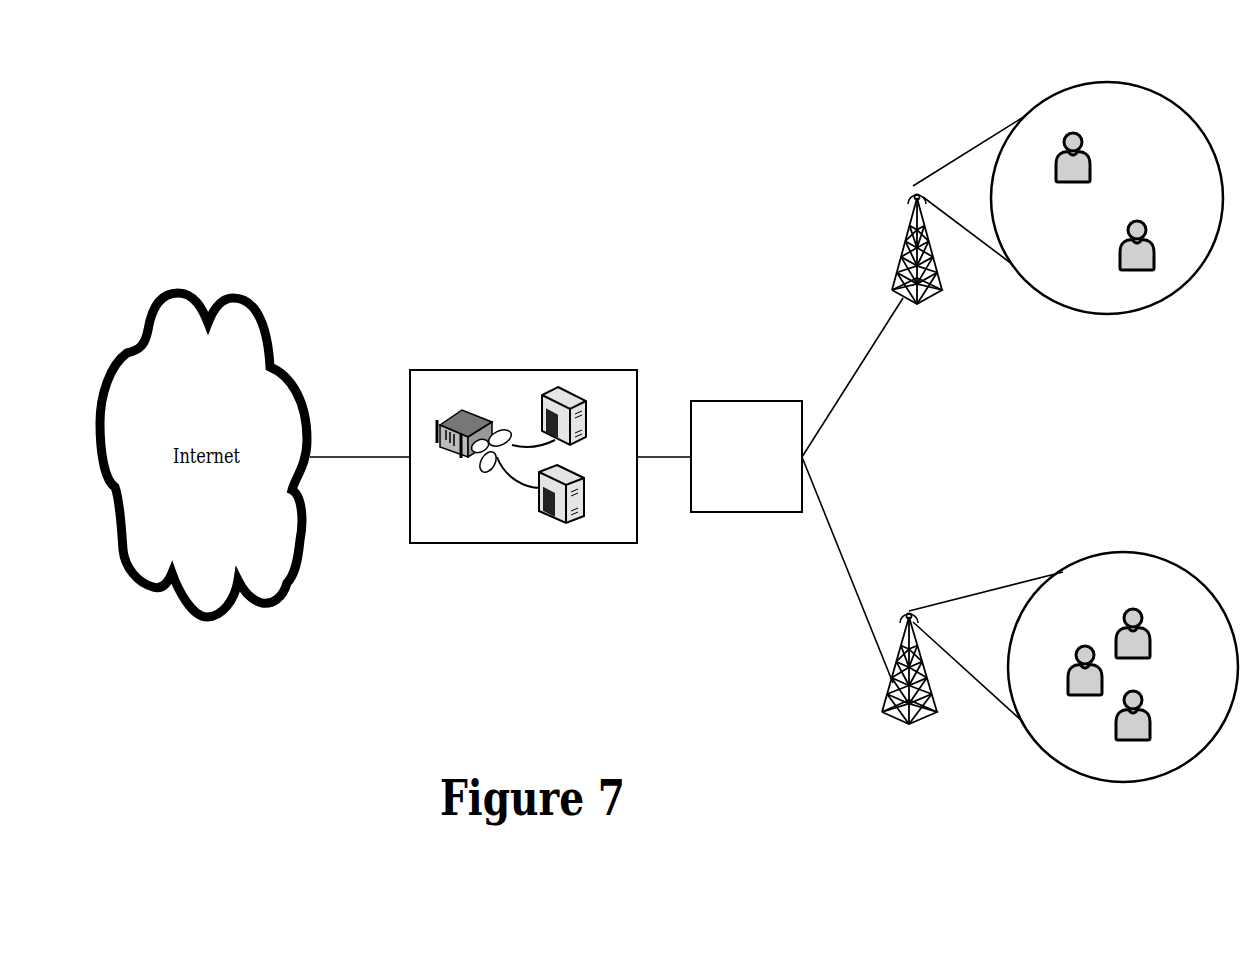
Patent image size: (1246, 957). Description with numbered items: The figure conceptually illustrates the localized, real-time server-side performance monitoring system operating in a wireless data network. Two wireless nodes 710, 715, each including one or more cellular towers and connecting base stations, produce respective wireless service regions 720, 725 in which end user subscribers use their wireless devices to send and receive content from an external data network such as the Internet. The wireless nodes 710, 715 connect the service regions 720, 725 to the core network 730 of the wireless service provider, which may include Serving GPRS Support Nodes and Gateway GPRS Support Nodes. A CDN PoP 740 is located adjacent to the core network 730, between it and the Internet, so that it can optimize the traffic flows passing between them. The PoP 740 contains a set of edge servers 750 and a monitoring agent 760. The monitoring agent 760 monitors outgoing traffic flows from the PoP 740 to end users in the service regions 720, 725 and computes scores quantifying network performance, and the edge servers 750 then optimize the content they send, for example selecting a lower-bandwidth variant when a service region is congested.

The wireless node 710 is at (933, 334).
The wireless node 715 is at (925, 754).
The wireless service region 720 is at (1102, 83).
The wireless service region 725 is at (1118, 552).
The core network 730 is at (762, 470).
The CDN PoP 740 is at (543, 370).
The set of edge servers 750 is at (583, 500).
The monitoring agent 760 is at (460, 420).